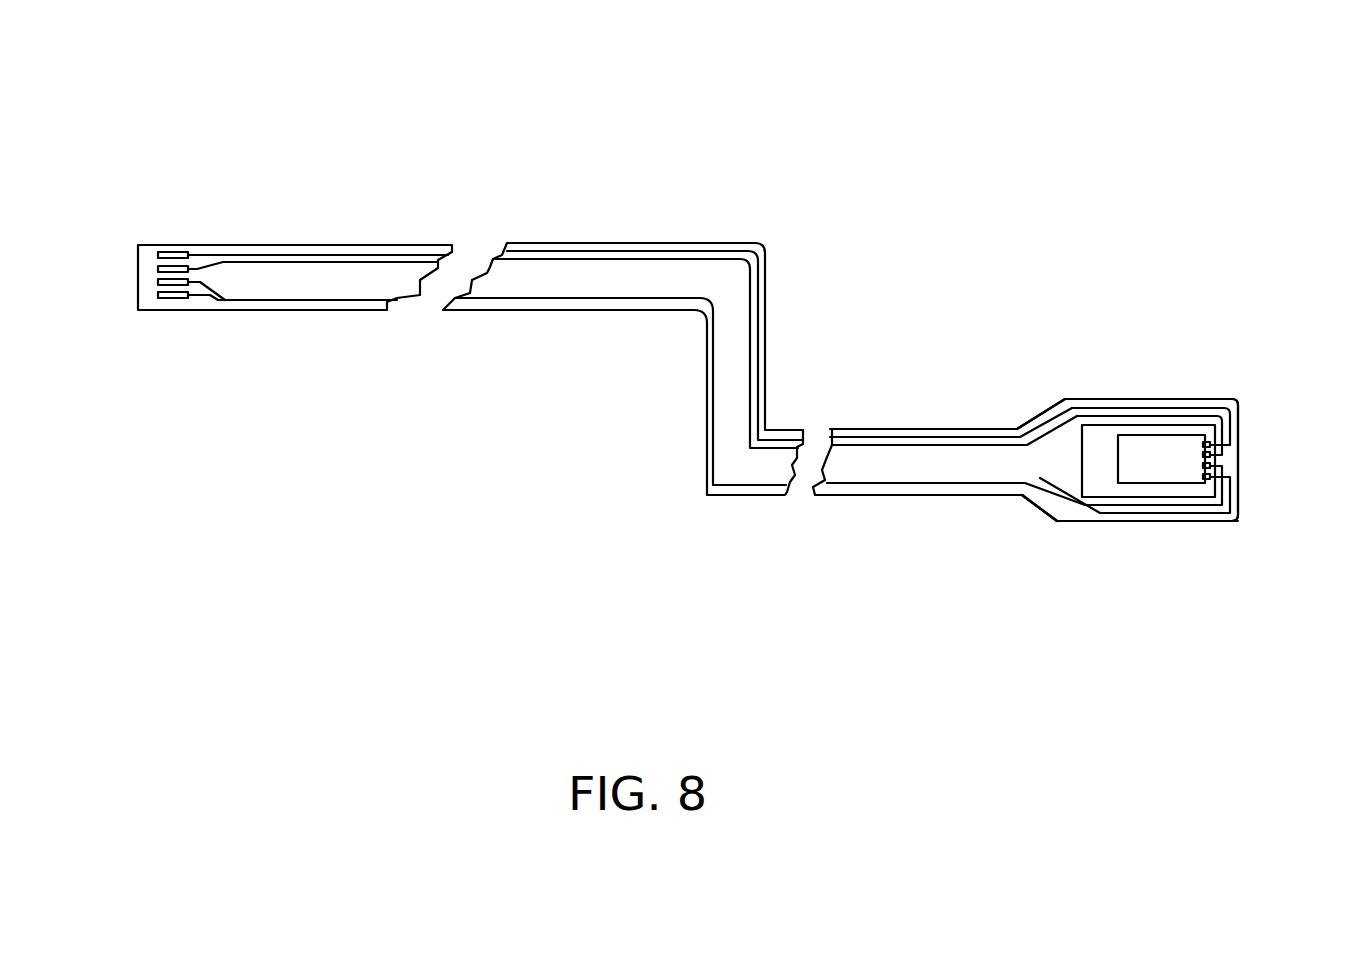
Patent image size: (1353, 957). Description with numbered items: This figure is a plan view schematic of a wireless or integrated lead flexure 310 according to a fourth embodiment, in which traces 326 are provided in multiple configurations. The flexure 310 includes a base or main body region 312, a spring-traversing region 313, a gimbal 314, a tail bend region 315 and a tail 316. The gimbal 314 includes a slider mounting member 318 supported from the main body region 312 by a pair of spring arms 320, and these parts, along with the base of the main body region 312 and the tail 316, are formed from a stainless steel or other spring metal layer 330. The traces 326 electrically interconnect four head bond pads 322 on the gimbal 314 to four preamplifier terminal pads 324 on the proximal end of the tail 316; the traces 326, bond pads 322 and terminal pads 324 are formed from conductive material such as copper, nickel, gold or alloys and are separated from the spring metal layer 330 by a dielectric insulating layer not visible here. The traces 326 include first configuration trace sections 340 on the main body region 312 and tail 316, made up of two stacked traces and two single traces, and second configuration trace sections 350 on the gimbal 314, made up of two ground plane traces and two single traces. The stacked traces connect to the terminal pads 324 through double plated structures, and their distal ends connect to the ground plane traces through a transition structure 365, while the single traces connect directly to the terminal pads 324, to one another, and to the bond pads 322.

The integrated lead flexure 310 is at (882, 206).
The main body region 312 is at (948, 427).
The spring-traversing region 313 is at (868, 427).
The gimbal 314 is at (1223, 365).
The tail bend region 315 is at (737, 234).
The tail 316 is at (550, 221).
The slider mounting member 318 is at (1170, 472).
The spring arms 320 is at (1157, 407).
The head bond pads 322 is at (1210, 445).
The preamplifier terminal pads 324 is at (171, 250).
The traces 326 is at (938, 484).
The spring metal layer 330 is at (860, 496).
The first configuration trace sections 340 is at (574, 321).
The second configuration trace sections 350 is at (1058, 405).
The transition structure 365 is at (1023, 496).